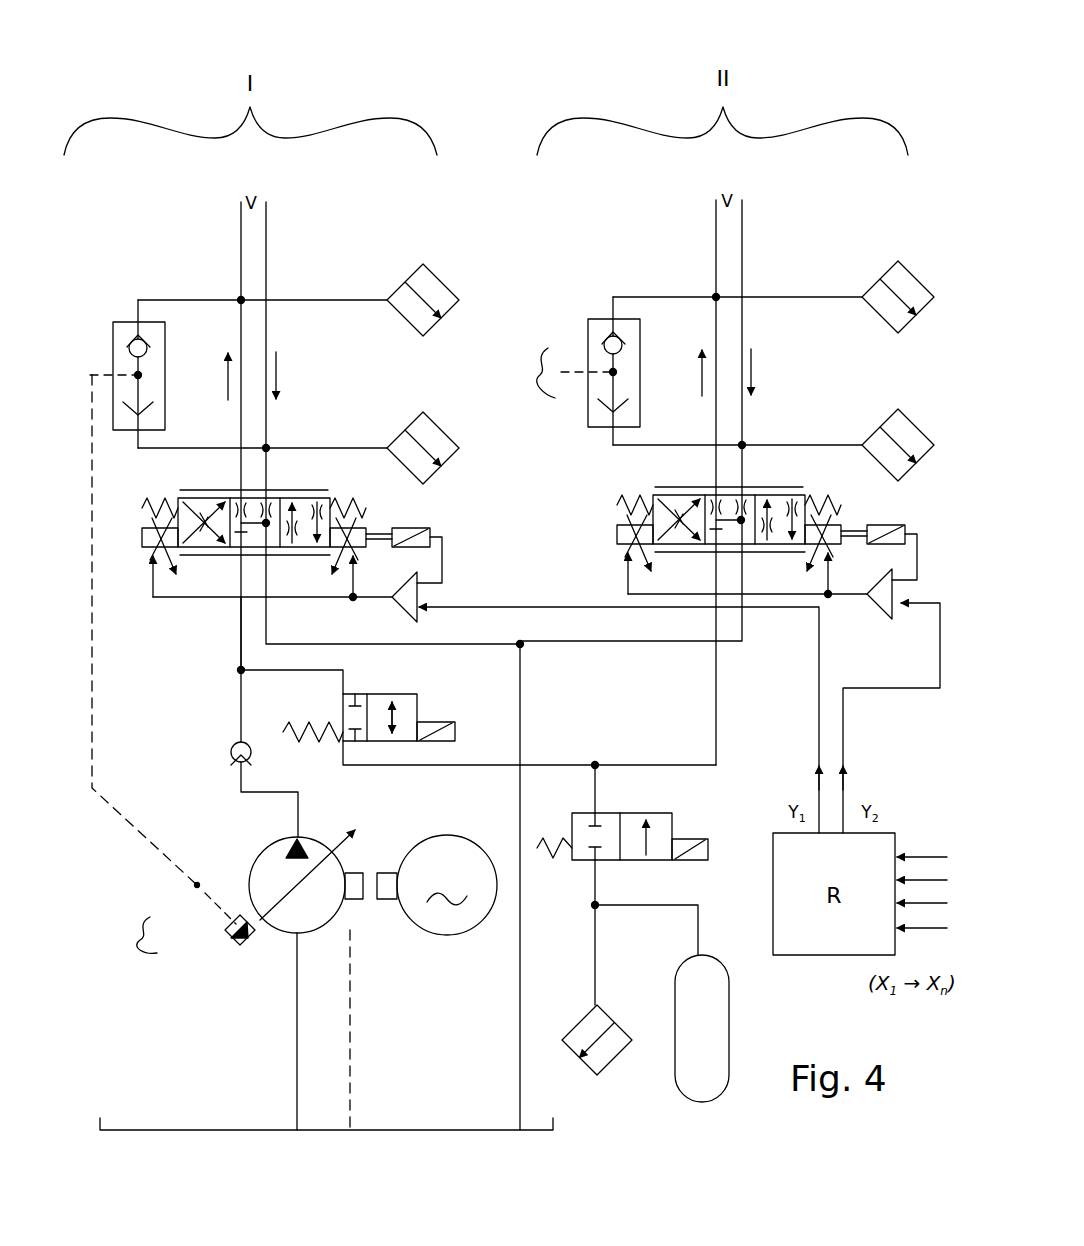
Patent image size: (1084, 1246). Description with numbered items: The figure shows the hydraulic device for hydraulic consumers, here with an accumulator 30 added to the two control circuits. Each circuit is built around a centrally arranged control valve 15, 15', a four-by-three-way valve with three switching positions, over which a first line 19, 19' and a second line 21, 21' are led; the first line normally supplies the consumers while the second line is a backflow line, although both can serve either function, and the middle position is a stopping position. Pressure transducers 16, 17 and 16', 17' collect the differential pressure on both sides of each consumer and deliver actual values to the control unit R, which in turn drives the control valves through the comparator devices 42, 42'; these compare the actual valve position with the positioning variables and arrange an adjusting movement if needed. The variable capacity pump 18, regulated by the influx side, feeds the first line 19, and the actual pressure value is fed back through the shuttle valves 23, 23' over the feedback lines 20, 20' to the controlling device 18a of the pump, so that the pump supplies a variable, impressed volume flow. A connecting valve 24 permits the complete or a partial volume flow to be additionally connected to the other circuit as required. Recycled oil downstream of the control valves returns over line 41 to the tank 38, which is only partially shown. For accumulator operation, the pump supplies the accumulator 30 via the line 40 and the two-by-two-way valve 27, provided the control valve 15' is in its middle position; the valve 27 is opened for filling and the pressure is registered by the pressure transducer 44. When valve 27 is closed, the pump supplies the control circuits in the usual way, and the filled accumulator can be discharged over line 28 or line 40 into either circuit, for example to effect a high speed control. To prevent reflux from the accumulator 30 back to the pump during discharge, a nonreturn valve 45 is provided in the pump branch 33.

The control valve 15 is at (279, 535).
The control valve 15' is at (751, 532).
The pressure transducer 16 is at (310, 287).
The pressure transducer 16' is at (773, 280).
The pressure transducer 17 is at (310, 435).
The pressure transducer 17' is at (773, 428).
The variable capacity pump 18 is at (272, 862).
The controlling device 18a is at (247, 945).
The first line 19 is at (230, 519).
The first line 19' is at (678, 482).
The feedback line 20 is at (146, 631).
The feedback line 20' is at (332, 739).
The second line 21 is at (393, 425).
The second line 21' is at (664, 420).
The shuttle valve 23 is at (151, 374).
The shuttle valve 23' is at (587, 365).
The connecting valve 24 is at (405, 712).
The 2/2-way valve 27 is at (660, 822).
The line 28 is at (695, 760).
The accumulator 30 is at (687, 987).
The pump branch 33 is at (235, 640).
The tank 38 is at (455, 1128).
The line 40 is at (472, 763).
The line 41 is at (522, 715).
The comparator device 42 is at (444, 579).
The comparator device 42' is at (885, 598).
The pressure transducer 44 is at (605, 1050).
The nonreturn valve 45 is at (235, 745).